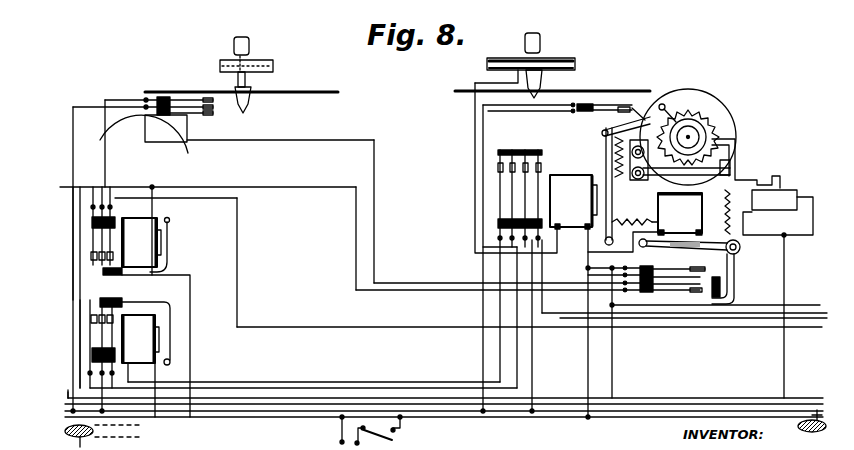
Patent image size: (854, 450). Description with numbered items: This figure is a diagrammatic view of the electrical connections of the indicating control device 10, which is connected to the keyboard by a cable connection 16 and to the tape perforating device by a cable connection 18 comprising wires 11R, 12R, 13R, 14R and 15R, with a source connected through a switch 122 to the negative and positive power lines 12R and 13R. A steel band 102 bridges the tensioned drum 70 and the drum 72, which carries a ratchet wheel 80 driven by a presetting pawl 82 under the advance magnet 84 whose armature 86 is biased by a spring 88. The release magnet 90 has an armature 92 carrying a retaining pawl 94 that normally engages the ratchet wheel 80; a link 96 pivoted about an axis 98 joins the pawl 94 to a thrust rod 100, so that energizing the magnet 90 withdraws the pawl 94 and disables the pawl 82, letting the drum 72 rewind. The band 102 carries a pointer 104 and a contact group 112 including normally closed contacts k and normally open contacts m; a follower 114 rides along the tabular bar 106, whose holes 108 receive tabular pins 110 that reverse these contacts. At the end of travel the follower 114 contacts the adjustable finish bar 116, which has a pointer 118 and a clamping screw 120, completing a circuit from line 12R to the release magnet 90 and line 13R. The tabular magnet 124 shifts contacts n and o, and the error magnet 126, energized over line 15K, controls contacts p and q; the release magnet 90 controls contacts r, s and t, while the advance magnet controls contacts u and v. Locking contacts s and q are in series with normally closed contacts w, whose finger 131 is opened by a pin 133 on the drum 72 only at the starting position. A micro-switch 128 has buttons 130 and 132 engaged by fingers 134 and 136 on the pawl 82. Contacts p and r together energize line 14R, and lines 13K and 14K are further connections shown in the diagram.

The indicating control device 10 is at (672, 352).
The cable connection 16 is at (445, 430).
The cable connection 18 is at (444, 400).
The drum 70 is at (188, 137).
The drum 72 is at (736, 132).
The ratchet wheel 80 is at (716, 122).
The pawl 82 is at (736, 158).
The advance magnet 84 is at (680, 214).
The armature 86 is at (703, 248).
The spring 88 is at (718, 212).
The release magnet 90 is at (573, 202).
The armature 92 is at (605, 170).
The retaining pawl 94 is at (602, 133).
The link 96 is at (648, 159).
The axis 98 is at (649, 165).
The thrust rod 100 is at (656, 172).
The steel band 102 is at (325, 90).
The pointer 104 is at (248, 104).
The tabular bar 106 is at (273, 58).
The holes 108 is at (233, 60).
The tabular pins 110 is at (250, 43).
The contact group 112 is at (141, 108).
The follower 114 is at (246, 82).
The finish bar 116 is at (520, 62).
The pointer 118 is at (540, 84).
The clamping screw 120 is at (541, 40).
The switch 122 is at (397, 437).
The tabular magnet 124 is at (140, 301).
The error magnet 126 is at (129, 357).
The micro-switch 128 is at (797, 192).
The operating button 130 is at (765, 187).
The finger 131 is at (700, 125).
The operating button 132 is at (782, 212).
The pin 133 is at (666, 105).
The operating finger 134 is at (757, 178).
The operating finger 136 is at (778, 234).
The normally closed contacts k is at (193, 99).
The normally open contacts m is at (189, 114).
The normally closed contacts n is at (120, 230).
The normally open contacts o is at (92, 236).
The normally open contacts p is at (122, 322).
The normally open contacts q is at (92, 333).
The normally open contacts r is at (520, 198).
The normally open contacts s is at (516, 196).
The normally open contacts t is at (530, 196).
The normally open contacts u is at (677, 269).
The normally closed contacts v is at (685, 290).
The normally closed contacts w is at (608, 103).
The wire 11R is at (827, 312).
The negative power line 12R is at (823, 399).
The positive power line 13R is at (800, 417).
The line 14R is at (830, 322).
The positive power line 15R is at (773, 306).
The wire 13K is at (68, 392).
The wire 14K is at (73, 187).
The line 15K is at (80, 372).